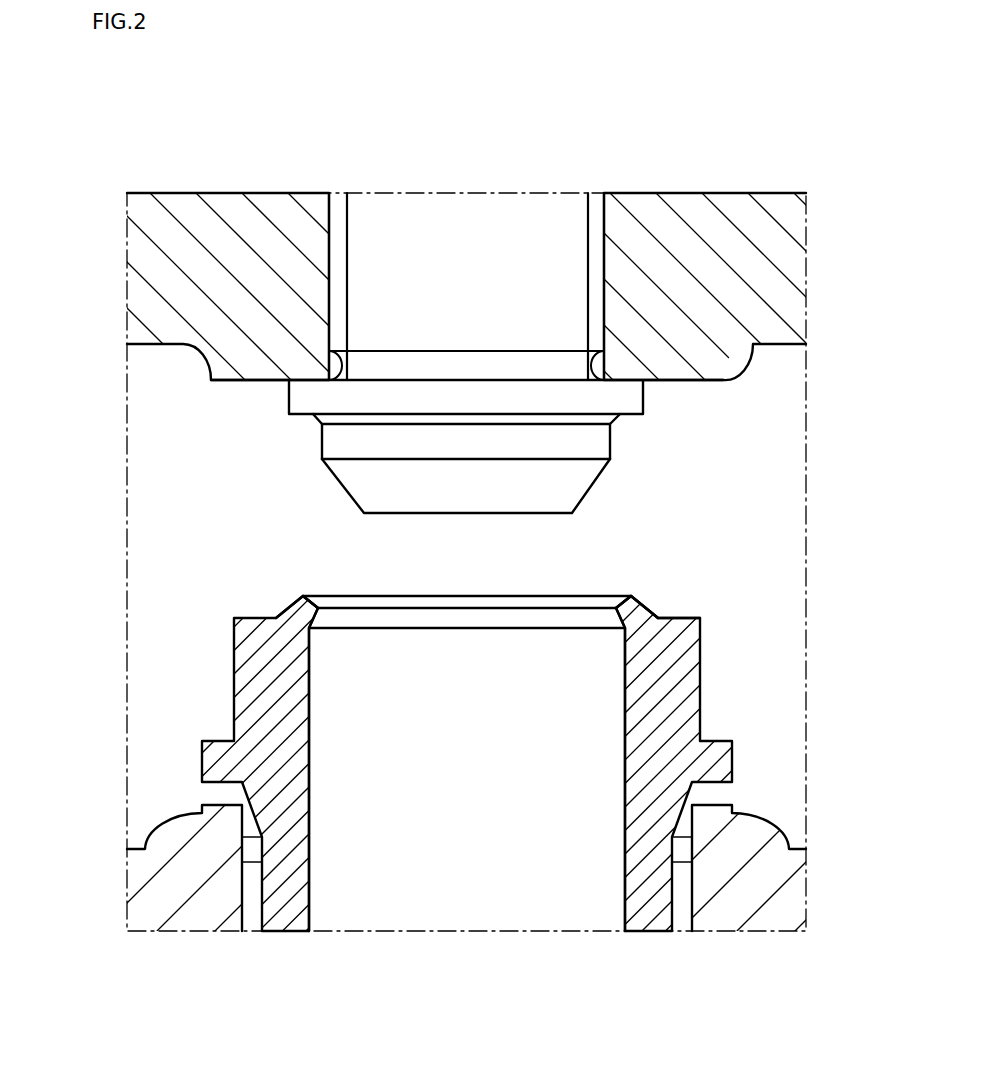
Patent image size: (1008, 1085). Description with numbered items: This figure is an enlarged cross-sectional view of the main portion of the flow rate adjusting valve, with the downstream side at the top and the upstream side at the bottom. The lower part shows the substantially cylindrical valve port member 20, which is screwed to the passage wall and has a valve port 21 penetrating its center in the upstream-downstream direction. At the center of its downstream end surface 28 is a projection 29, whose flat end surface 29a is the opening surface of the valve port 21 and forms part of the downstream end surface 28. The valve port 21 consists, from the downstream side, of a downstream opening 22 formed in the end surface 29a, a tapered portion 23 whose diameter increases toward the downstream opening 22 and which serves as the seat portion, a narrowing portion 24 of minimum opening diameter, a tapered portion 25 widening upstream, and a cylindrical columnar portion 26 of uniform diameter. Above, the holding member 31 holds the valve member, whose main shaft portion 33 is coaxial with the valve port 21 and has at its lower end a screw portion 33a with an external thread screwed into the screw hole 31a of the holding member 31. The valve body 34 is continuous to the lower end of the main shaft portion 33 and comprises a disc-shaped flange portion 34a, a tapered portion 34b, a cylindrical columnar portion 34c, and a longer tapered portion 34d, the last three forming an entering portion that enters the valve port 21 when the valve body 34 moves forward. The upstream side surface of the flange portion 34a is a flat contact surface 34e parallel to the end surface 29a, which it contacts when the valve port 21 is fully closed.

The valve port member 20 is at (230, 691).
The valve port 21 is at (468, 734).
The downstream opening 22 is at (442, 593).
The tapered portion 23 is at (613, 595).
The narrowing portion 24 is at (477, 608).
The tapered portion 25 is at (313, 628).
The cylindrical columnar portion 26 is at (310, 760).
The downstream end surface 28 is at (684, 618).
The projection 29 is at (627, 605).
The end surface 29a is at (303, 595).
The holding member 31 is at (767, 250).
The screw hole 31a is at (330, 222).
The main shaft portion 33 is at (466, 258).
The screw portion 33a is at (510, 222).
The valve body 34 is at (462, 444).
The flange portion 34a is at (632, 400).
The tapered portion 34b is at (328, 418).
The cylindrical columnar portion 34c is at (628, 416).
The tapered portion 34d is at (363, 483).
The contact surface 34e is at (590, 439).